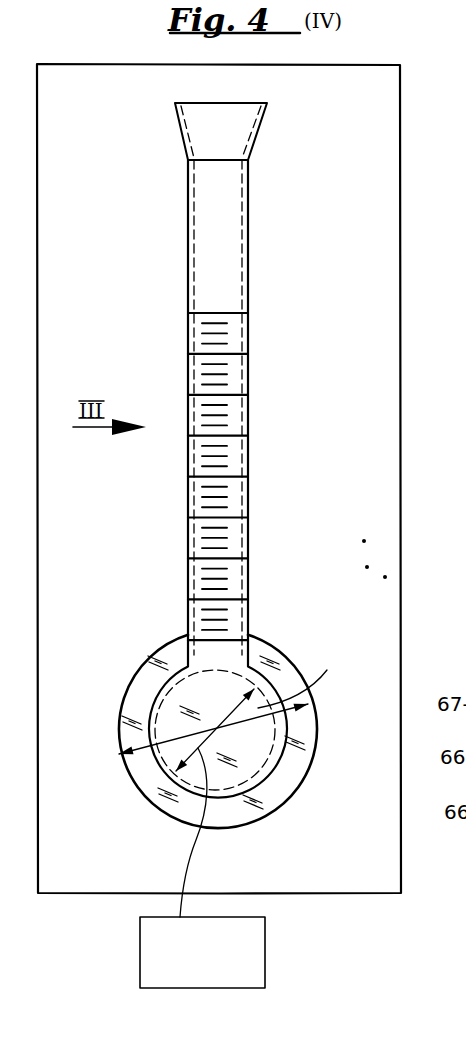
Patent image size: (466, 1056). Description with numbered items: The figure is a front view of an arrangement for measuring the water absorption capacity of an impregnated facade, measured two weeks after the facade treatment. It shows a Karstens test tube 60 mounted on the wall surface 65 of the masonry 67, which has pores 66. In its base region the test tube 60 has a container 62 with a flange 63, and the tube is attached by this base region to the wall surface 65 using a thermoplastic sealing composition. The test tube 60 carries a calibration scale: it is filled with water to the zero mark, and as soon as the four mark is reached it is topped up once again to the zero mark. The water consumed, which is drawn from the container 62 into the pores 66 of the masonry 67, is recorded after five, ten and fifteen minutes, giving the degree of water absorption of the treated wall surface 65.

The test tube 60 is at (250, 278).
The container 62 is at (253, 757).
The flange 63 is at (305, 735).
The wall surface 65 is at (341, 860).
The pores 66 is at (364, 541).
The masonry 67 is at (325, 538).